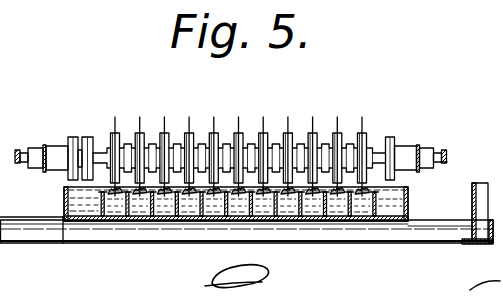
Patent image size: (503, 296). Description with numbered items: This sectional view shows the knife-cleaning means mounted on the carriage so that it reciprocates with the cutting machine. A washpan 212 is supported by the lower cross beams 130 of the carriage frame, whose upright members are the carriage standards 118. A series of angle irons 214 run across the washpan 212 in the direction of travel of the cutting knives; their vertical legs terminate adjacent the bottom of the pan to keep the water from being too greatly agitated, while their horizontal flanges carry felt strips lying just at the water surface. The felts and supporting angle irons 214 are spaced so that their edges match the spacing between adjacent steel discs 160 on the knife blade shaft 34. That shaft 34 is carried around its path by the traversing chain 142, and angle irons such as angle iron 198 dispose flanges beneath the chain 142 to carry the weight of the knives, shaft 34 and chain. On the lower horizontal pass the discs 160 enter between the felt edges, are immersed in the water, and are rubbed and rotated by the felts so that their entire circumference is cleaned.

The lower cross beams 130 is at (481, 245).
The carriage standards 118 is at (484, 190).
The washpan 212 is at (101, 218).
The angle irons 214 is at (193, 204).
The steel discs 160 is at (337, 130).
The knife blade shaft 34 is at (251, 150).
The traversing chain 142 is at (26, 152).
The angle iron 198 is at (445, 150).